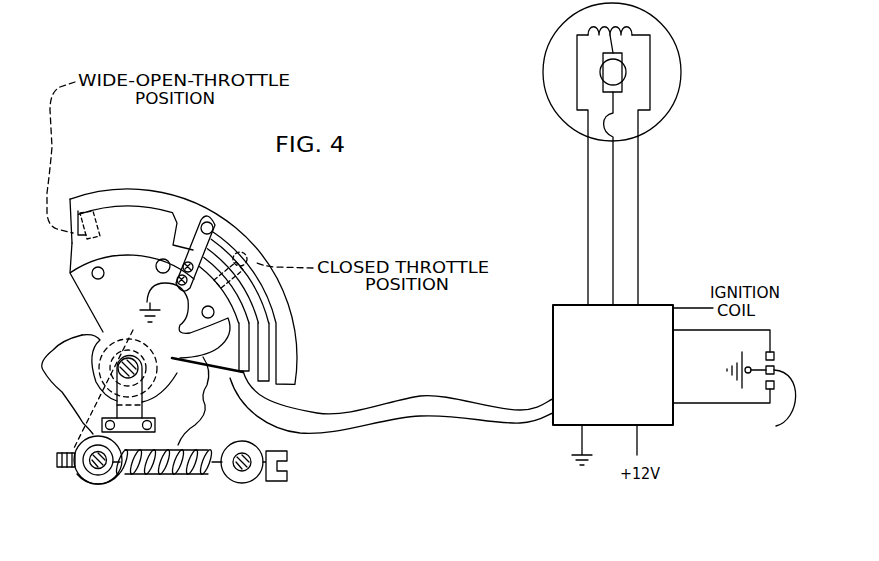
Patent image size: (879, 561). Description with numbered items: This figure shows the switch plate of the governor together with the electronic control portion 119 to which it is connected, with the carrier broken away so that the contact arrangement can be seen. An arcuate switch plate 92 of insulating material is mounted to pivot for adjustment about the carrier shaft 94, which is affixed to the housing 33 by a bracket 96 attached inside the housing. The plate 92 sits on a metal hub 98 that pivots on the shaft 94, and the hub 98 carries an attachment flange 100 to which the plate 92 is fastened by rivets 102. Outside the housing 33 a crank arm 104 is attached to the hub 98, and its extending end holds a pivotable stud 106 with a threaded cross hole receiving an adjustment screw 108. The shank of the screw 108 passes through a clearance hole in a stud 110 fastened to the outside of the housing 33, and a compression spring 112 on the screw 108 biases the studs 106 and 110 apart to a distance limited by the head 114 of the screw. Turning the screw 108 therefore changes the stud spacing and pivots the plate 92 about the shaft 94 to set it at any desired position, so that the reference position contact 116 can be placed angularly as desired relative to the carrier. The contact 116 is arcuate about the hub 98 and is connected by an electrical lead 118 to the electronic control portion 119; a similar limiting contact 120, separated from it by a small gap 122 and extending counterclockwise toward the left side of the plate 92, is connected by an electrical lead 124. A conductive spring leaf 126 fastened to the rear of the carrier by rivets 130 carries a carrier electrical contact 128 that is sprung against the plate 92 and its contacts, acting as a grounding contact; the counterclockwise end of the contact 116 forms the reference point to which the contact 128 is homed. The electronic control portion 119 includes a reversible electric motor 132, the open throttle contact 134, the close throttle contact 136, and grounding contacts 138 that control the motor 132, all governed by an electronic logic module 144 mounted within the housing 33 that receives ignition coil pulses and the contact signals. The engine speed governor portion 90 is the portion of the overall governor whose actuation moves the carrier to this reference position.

The housing 33 is at (160, 426).
The engine speed governor portion 90 is at (322, 368).
The arcuate switch plate 92 is at (298, 344).
The carrier shaft 94 is at (137, 360).
The bracket 96 is at (87, 437).
The metal hub 98 is at (175, 402).
The attachment flange 100 is at (230, 365).
The rivets 102 is at (97, 279).
The crank arm 104 is at (82, 486).
The pivotable stud 106 is at (112, 490).
The adjustment screw 108 is at (187, 478).
The stud 110 is at (260, 482).
The compression spring 112 is at (160, 478).
The head of the screw 114 is at (270, 480).
The reference position contact 116 is at (267, 250).
The electrical lead 118 is at (431, 395).
The electronic control portion 119 is at (517, 215).
The limiting contact 120 is at (132, 193).
The gap 122 is at (202, 222).
The electrical lead 124 is at (365, 430).
The spring leaf 126 is at (213, 248).
The carrier electrical contact 128 is at (215, 236).
The rivets 130 is at (180, 293).
The reversible electric motor 132 is at (550, 40).
The open throttle contact 134 is at (766, 356).
The close throttle contact 136 is at (766, 385).
The grounding contacts 138 is at (767, 407).
The electronic logic module 144 is at (553, 340).